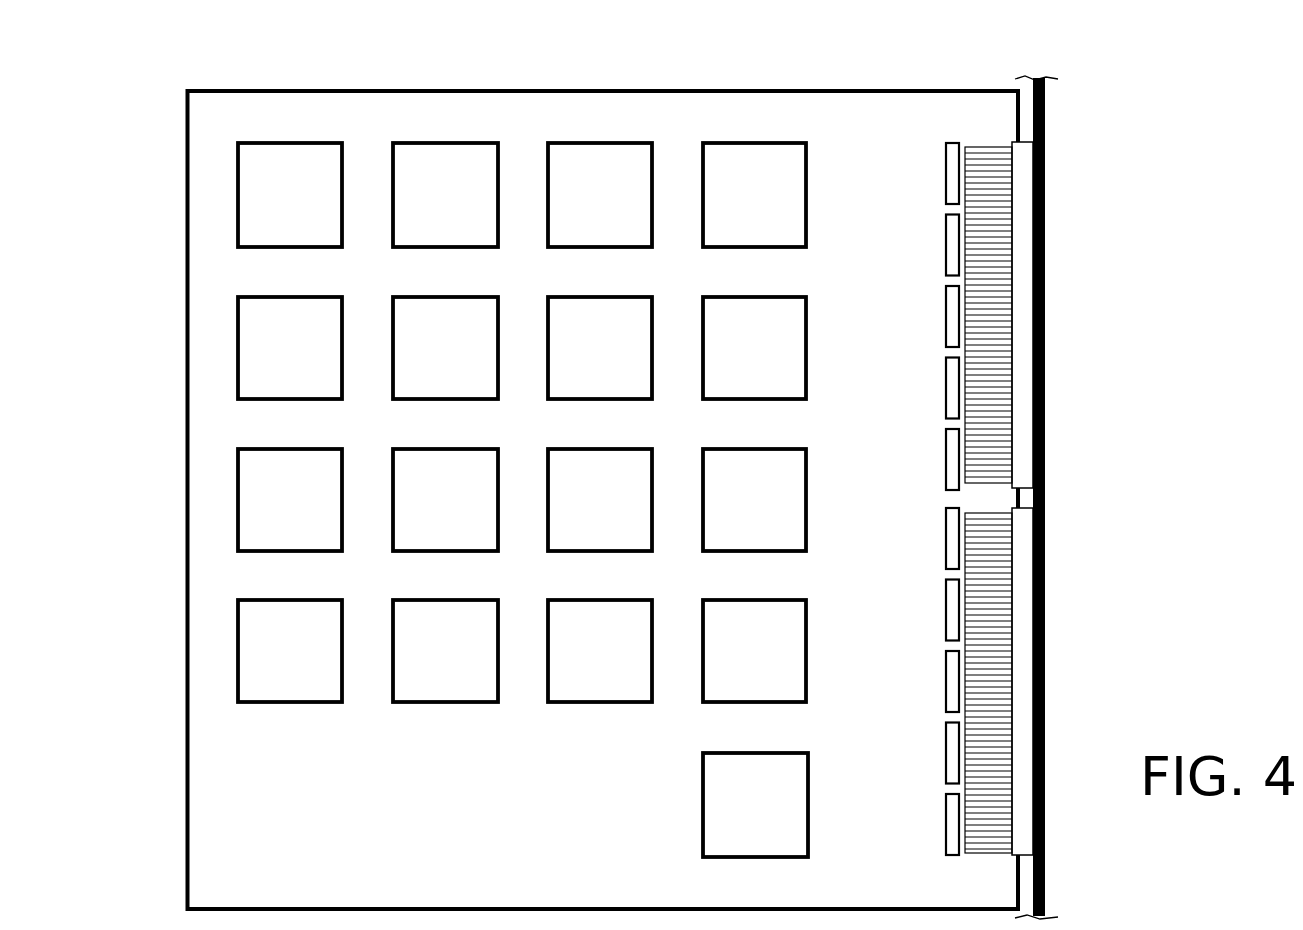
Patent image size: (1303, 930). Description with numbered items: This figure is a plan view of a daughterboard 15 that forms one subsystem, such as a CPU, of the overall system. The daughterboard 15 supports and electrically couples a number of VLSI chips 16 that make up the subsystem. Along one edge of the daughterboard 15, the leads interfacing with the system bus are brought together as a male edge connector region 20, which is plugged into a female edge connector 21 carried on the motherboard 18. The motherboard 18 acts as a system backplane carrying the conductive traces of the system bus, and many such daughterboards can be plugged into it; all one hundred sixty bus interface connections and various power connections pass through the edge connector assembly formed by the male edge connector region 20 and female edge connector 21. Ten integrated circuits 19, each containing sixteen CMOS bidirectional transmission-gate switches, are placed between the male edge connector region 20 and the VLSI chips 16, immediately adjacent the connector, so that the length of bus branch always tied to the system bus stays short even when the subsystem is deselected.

The daughterboard 15 is at (263, 783).
The VLSI chips 16 is at (237, 650).
The motherboard 18 is at (1045, 130).
The integrated circuits 19 is at (945, 187).
The male edge connector region 20 is at (983, 170).
The female edge connector 21 is at (1020, 403).